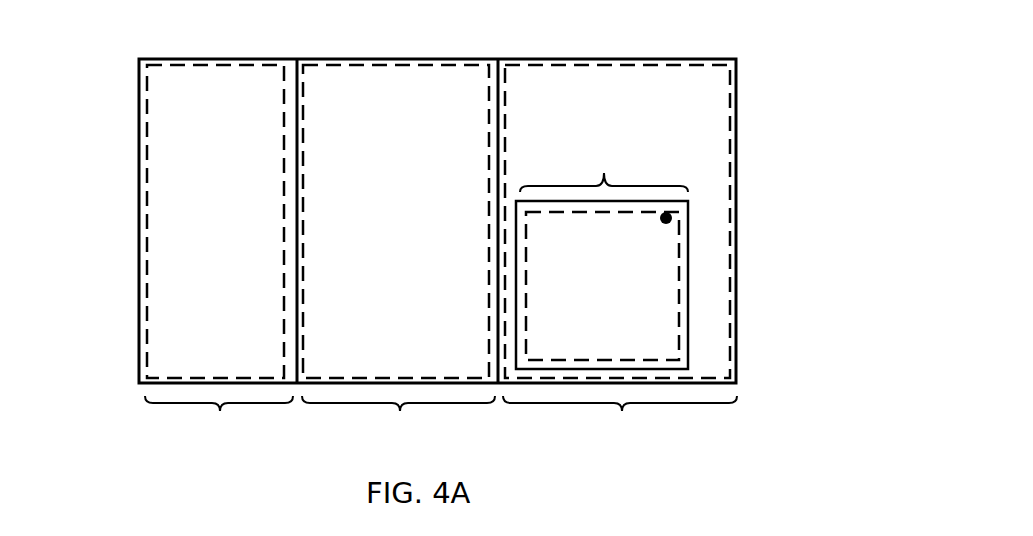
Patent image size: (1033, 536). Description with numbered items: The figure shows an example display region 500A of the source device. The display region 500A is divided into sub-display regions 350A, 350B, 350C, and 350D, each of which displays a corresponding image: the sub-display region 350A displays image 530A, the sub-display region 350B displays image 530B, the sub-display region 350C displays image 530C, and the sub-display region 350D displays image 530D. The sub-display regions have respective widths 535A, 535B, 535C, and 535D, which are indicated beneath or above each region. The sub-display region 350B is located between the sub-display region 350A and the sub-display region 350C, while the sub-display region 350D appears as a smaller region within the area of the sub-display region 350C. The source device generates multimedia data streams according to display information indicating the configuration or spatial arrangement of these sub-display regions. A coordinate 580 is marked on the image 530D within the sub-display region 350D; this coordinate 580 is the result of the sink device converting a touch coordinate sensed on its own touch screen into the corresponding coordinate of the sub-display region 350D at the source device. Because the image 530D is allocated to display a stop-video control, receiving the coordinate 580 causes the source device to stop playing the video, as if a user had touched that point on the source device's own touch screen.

The display region 500A is at (140, 58).
The sub-display region 350A is at (229, 59).
The sub-display region 350B is at (371, 59).
The sub-display region 350C is at (591, 59).
The sub-display region 350D is at (688, 341).
The image 530A is at (215, 221).
The image 530B is at (396, 221).
The image 530C is at (617, 132).
The image 530D is at (602, 286).
The width 535A is at (219, 419).
The width 535B is at (398, 418).
The width 535C is at (620, 416).
The width 535D is at (604, 168).
The coordinate 580 is at (670, 222).